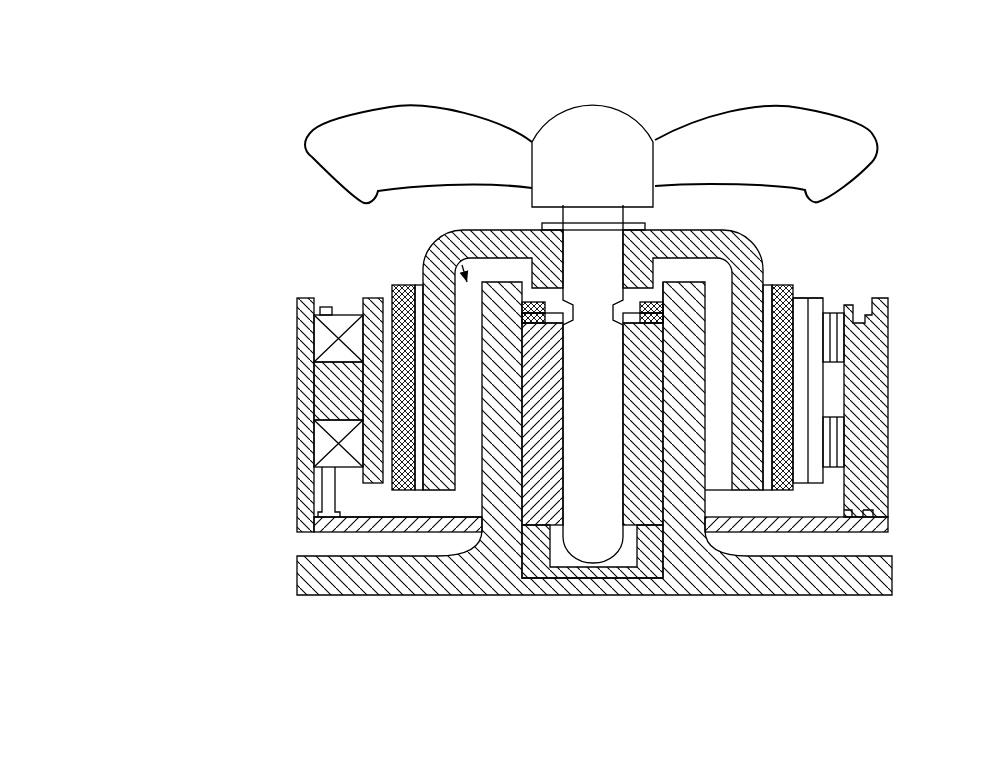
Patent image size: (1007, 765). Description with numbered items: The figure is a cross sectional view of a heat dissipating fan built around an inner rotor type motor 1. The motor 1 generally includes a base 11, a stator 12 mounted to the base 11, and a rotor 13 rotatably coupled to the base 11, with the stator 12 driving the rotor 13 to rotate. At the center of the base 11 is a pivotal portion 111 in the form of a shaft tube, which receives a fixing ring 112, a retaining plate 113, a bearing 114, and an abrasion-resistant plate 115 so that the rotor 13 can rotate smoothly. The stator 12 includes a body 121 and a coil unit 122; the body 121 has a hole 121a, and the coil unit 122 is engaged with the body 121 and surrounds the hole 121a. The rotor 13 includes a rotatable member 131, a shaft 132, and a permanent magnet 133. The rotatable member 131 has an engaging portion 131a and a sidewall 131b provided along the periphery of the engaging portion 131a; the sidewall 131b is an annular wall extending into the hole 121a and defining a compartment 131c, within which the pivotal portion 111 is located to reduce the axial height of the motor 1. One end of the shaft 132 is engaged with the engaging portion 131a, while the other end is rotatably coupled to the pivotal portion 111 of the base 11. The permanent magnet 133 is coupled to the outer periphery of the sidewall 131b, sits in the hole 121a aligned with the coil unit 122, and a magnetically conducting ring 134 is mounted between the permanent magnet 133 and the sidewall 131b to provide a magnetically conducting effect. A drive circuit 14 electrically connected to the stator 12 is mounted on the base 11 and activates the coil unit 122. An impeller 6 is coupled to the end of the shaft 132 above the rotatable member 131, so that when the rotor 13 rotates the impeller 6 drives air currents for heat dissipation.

The inner rotor type motor 1 is at (252, 222).
The impeller 6 is at (803, 113).
The base 11 is at (305, 575).
The pivotal portion 111 is at (495, 443).
The fixing ring 112 is at (657, 298).
The retaining plate 113 is at (650, 362).
The bearing 114 is at (688, 350).
The abrasion-resistant plate 115 is at (658, 550).
The stator 12 is at (897, 352).
The body 121 is at (878, 392).
The hole 121a is at (845, 298).
The coil unit 122 is at (800, 308).
The rotor 13 is at (765, 240).
The rotatable member 131 is at (460, 48).
The engaging portion 131a is at (495, 235).
The sidewall 131b is at (420, 285).
The compartment 131c is at (438, 335).
The shaft 132 is at (597, 353).
The permanent magnet 133 is at (403, 287).
The magnetically conducting ring 134 is at (415, 283).
The drive circuit 14 is at (830, 530).